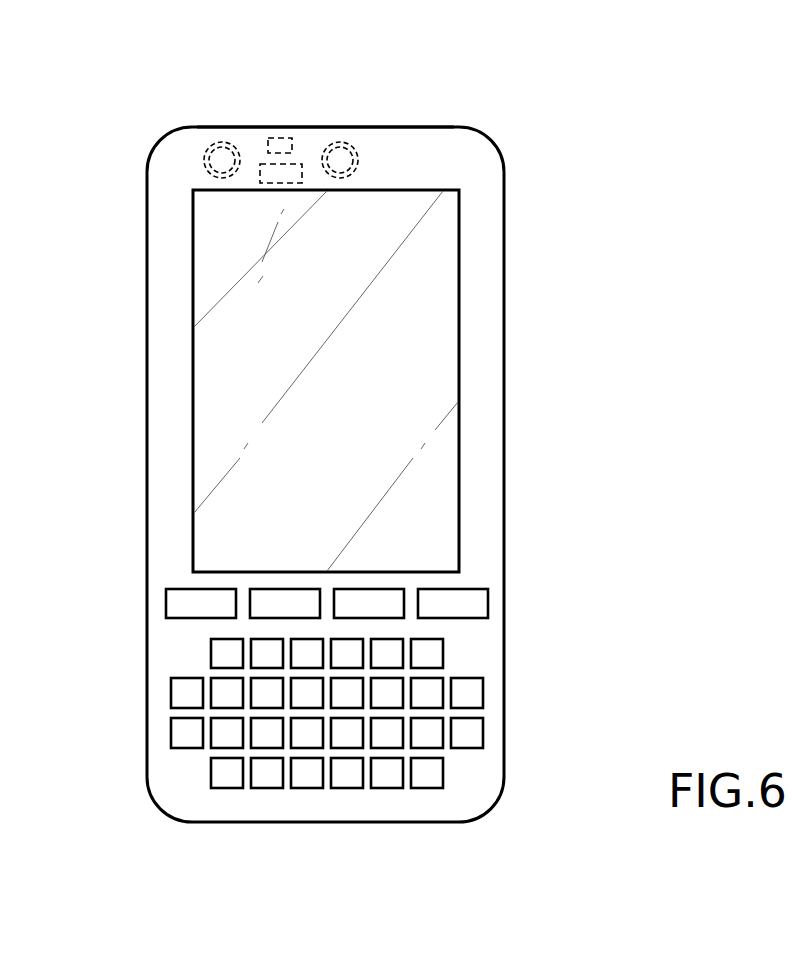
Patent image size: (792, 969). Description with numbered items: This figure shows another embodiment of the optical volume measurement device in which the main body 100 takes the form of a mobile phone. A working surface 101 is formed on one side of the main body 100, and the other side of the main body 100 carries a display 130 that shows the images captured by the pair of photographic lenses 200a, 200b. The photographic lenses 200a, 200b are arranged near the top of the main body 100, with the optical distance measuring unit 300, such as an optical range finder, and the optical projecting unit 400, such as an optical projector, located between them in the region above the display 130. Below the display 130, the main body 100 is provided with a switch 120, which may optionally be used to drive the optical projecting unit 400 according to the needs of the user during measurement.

The main body 100 is at (508, 326).
The working surface 101 is at (441, 124).
The switch 120 is at (473, 602).
The display 130 is at (430, 275).
The photographic lens 200a is at (344, 140).
The photographic lens 200b is at (216, 140).
The optical distance measuring unit 300 is at (270, 183).
The optical projecting unit 400 is at (277, 137).